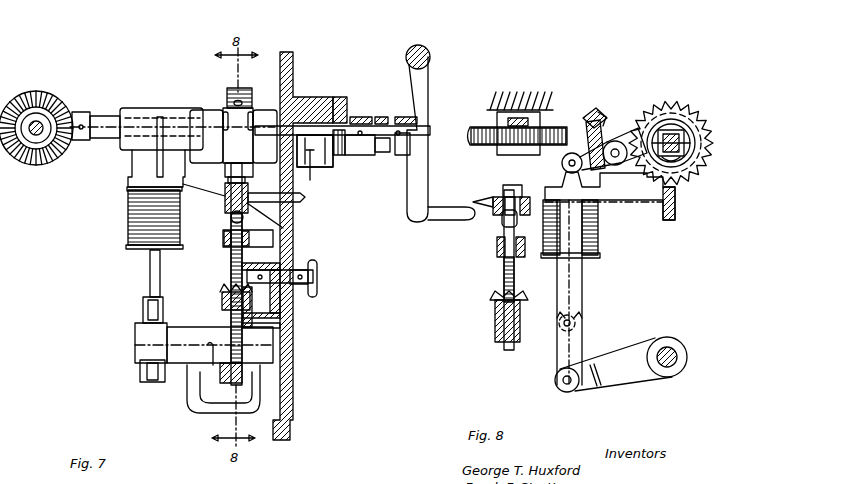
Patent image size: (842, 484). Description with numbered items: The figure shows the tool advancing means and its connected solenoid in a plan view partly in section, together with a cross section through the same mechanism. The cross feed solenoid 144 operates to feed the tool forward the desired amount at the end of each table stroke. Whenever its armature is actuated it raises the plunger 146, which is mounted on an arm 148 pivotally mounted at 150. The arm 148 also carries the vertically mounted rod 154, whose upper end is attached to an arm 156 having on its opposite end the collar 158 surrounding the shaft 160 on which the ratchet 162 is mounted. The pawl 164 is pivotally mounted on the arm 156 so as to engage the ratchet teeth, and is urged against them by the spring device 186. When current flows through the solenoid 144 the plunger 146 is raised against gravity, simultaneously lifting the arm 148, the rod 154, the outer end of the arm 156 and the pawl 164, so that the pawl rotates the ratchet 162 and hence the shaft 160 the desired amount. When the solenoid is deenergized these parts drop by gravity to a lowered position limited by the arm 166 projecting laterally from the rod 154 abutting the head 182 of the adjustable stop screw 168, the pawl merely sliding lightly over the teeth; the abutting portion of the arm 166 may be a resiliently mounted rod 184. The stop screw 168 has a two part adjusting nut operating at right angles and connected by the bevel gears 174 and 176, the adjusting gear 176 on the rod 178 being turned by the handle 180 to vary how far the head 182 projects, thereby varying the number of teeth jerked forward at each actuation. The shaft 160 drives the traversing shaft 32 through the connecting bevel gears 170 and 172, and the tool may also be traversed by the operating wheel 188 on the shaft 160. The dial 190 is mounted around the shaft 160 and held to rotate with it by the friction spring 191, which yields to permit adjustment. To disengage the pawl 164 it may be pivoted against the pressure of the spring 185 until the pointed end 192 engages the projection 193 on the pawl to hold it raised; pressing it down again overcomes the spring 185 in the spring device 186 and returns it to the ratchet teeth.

In FIG. 7, the traversing shaft 32 is at (34, 136).
In FIG. 8, the traversing shaft 32 is at (563, 125).
In FIG. 7, the cross feed solenoid 144 is at (126, 228).
In FIG. 8, the cross feed solenoid 144 is at (600, 235).
In FIG. 7, the plunger 146 is at (150, 275).
In FIG. 7, the arm 148 is at (215, 375).
In FIG. 8, the arm 148 is at (655, 378).
In FIG. 8, the pivot 150 is at (670, 347).
In FIG. 8, the rod 154 is at (585, 280).
In FIG. 7, the arm 156 is at (193, 150).
In FIG. 8, the arm 156 is at (630, 175).
In FIG. 7, the collar 158 is at (208, 118).
In FIG. 8, the collar 158 is at (680, 160).
In FIG. 7, the shaft 160 is at (106, 115).
In FIG. 8, the shaft 160 is at (690, 140).
In FIG. 7, the ratchet 162 is at (246, 92).
In FIG. 8, the ratchet 162 is at (660, 120).
In FIG. 8, the pawl 164 is at (633, 130).
In FIG. 7, the arm 166 is at (225, 200).
In FIG. 8, the arm 166 is at (503, 190).
In FIG. 7, the adjustable stop screw 168 is at (231, 262).
In FIG. 8, the adjustable stop screw 168 is at (505, 348).
In FIG. 7, the bevel gear 170 is at (82, 111).
In FIG. 8, the bevel gear 170 is at (680, 128).
In FIG. 7, the bevel gear 172 is at (35, 90).
In FIG. 8, the bevel gear 172 is at (705, 112).
In FIG. 7, the bevel gear 174 is at (220, 290).
In FIG. 8, the bevel gear 174 is at (490, 299).
In FIG. 7, the adjusting gear 176 is at (268, 265).
In FIG. 7, the rod 178 is at (290, 290).
In FIG. 7, the turning handle 180 is at (318, 265).
In FIG. 7, the head 182 is at (223, 232).
In FIG. 8, the head 182 is at (497, 245).
In FIG. 7, the rod 184 is at (285, 205).
In FIG. 8, the rod 184 is at (502, 218).
In FIG. 8, the spring 185 is at (603, 117).
In FIG. 8, the spring device 186 is at (597, 108).
In FIG. 7, the operating wheel 188 is at (430, 75).
In FIG. 7, the dial 190 is at (330, 168).
In FIG. 7, the friction spring 191 is at (356, 117).
In FIG. 8, the pointed end 192 is at (630, 133).
In FIG. 8, the projection 193 is at (588, 122).